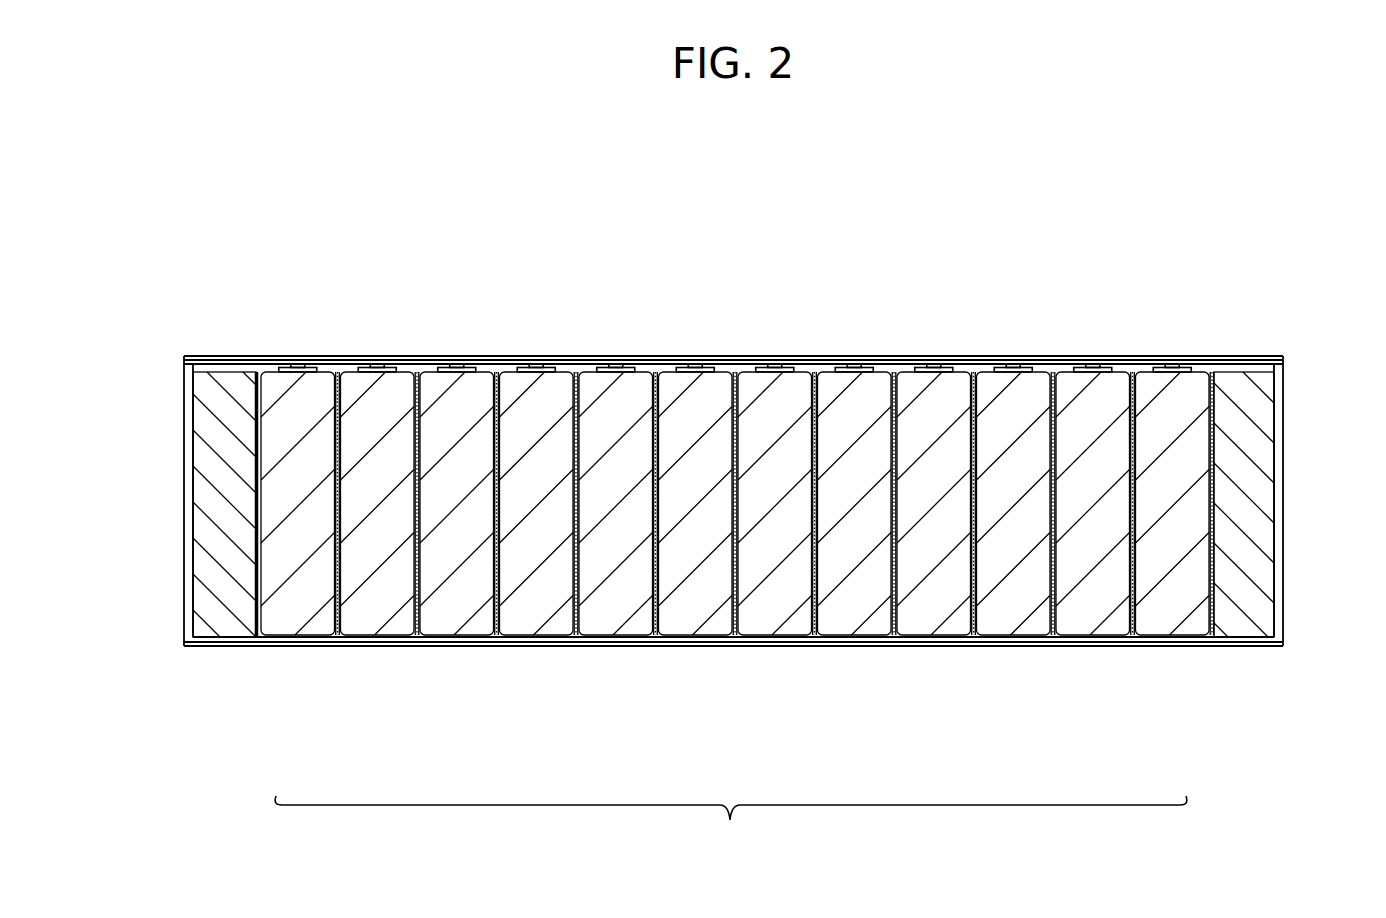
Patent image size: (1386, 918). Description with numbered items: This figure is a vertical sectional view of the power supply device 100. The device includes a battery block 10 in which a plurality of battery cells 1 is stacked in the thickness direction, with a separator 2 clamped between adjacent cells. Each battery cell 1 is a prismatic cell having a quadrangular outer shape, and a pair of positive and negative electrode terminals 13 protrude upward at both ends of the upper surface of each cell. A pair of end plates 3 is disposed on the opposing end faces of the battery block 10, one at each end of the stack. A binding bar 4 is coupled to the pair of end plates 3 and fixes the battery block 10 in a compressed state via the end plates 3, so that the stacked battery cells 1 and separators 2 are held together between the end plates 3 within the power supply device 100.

The power supply device 100 is at (1172, 208).
The battery block 10 is at (731, 829).
The battery cell 1 is at (297, 602).
The separator 2 is at (337, 632).
The end plate 3 is at (208, 517).
The binding bar 4 is at (755, 356).
The electrode terminal 13 is at (298, 364).